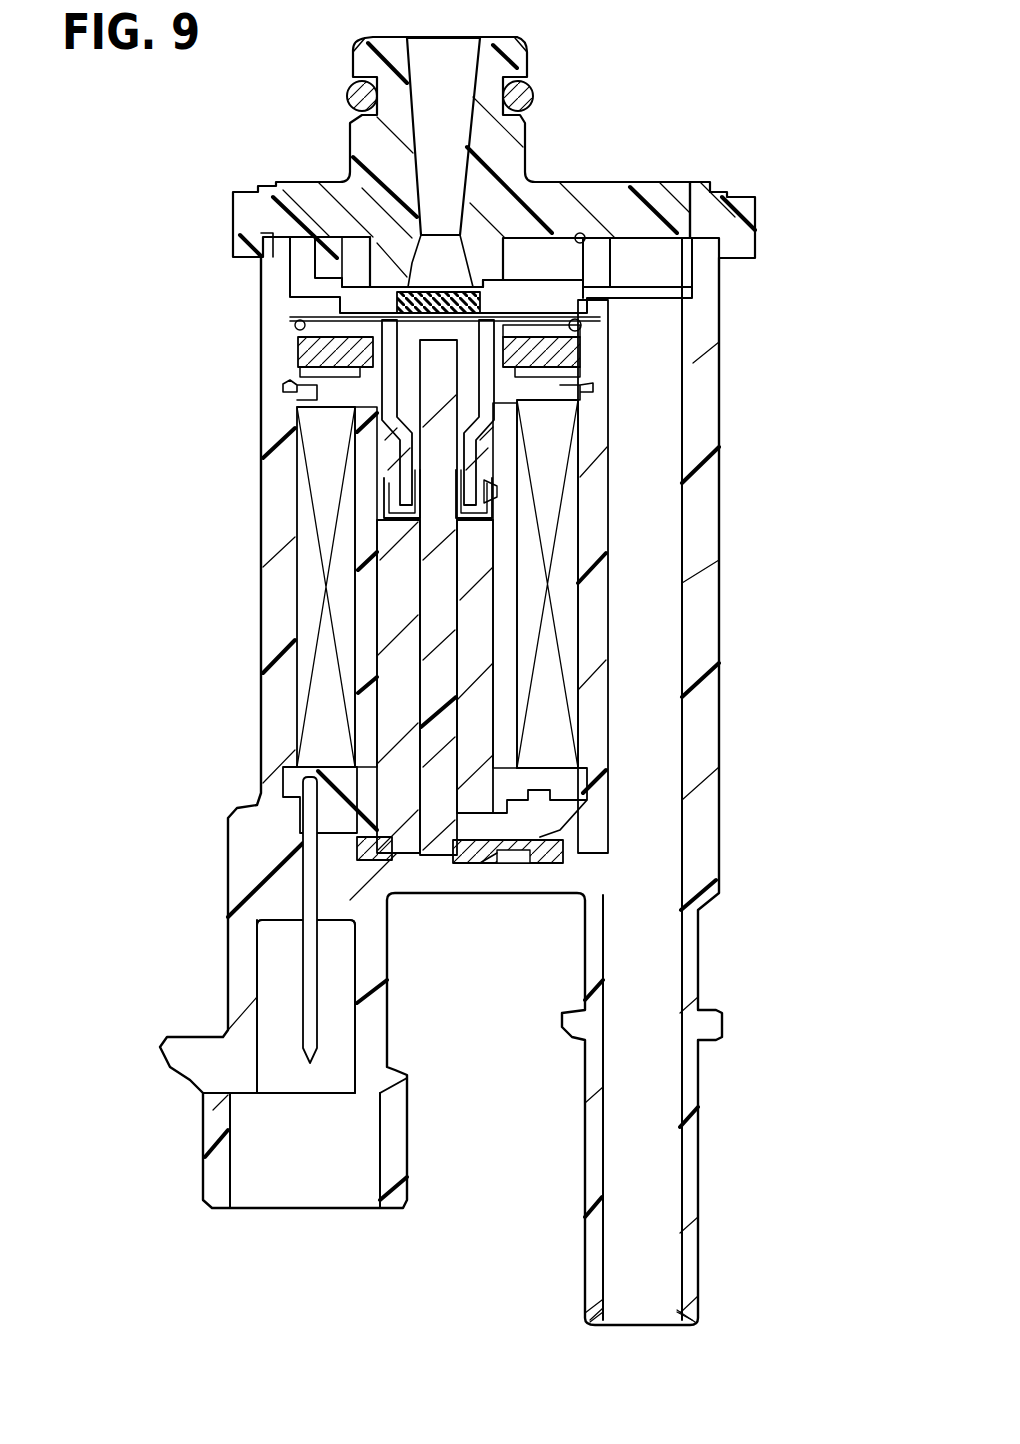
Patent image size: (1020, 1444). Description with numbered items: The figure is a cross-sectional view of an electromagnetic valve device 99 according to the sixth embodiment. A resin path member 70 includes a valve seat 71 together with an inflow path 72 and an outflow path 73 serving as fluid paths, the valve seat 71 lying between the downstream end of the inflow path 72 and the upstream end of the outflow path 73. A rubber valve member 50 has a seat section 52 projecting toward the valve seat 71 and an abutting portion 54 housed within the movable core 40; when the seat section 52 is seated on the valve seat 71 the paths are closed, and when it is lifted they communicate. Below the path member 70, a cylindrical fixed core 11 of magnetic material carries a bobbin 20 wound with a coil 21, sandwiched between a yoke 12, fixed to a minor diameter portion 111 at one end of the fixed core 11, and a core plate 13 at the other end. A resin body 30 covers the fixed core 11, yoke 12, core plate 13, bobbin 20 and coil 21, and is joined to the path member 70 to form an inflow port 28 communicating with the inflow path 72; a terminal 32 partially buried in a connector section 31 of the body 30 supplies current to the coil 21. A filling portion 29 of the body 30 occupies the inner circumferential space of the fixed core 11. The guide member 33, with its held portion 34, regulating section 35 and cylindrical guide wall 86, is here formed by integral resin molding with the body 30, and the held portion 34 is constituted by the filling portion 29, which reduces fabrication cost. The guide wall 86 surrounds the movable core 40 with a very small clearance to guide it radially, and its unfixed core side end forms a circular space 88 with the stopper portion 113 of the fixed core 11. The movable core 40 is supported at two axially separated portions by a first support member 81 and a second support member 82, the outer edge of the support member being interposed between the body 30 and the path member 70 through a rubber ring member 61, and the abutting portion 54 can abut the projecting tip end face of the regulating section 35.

The fixed core 11 is at (393, 604).
The yoke 12 is at (557, 850).
The core plate 13 is at (320, 352).
The bobbin 20 is at (508, 596).
The coil 21 is at (568, 527).
The inflow port 28 is at (690, 1275).
The filling portion 29 is at (443, 647).
The body 30 is at (417, 884).
The connector section 31 is at (215, 1128).
The terminal 32 is at (310, 1042).
The guide member 33 is at (500, 492).
The held portion 34 is at (430, 535).
The regulating section 35 is at (505, 352).
The movable core 40 is at (380, 383).
The valve member 50 is at (490, 297).
The seat section 52 is at (407, 303).
The abutting portion 54 is at (387, 328).
The rubber ring member 61 is at (540, 343).
The path member 70 is at (688, 187).
The valve seat 71 is at (420, 270).
The inflow path 72 is at (590, 246).
The outflow path 73 is at (410, 47).
The first support member 81 is at (590, 320).
The second support member 82 is at (500, 440).
The guide wall 86 is at (380, 463).
The space 88 is at (387, 489).
The electromagnetic valve device 99 is at (527, 43).
The minor diameter portion 111 is at (483, 853).
The stopper portion 113 is at (492, 505).